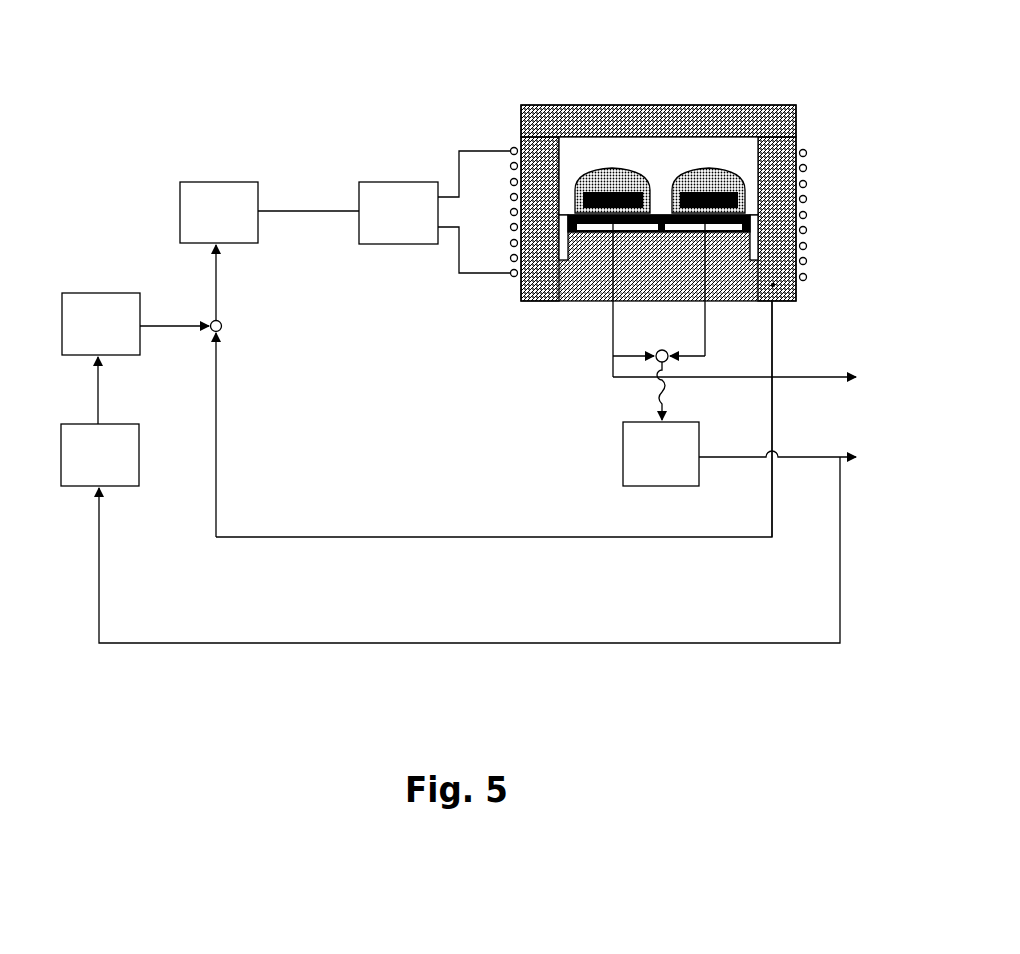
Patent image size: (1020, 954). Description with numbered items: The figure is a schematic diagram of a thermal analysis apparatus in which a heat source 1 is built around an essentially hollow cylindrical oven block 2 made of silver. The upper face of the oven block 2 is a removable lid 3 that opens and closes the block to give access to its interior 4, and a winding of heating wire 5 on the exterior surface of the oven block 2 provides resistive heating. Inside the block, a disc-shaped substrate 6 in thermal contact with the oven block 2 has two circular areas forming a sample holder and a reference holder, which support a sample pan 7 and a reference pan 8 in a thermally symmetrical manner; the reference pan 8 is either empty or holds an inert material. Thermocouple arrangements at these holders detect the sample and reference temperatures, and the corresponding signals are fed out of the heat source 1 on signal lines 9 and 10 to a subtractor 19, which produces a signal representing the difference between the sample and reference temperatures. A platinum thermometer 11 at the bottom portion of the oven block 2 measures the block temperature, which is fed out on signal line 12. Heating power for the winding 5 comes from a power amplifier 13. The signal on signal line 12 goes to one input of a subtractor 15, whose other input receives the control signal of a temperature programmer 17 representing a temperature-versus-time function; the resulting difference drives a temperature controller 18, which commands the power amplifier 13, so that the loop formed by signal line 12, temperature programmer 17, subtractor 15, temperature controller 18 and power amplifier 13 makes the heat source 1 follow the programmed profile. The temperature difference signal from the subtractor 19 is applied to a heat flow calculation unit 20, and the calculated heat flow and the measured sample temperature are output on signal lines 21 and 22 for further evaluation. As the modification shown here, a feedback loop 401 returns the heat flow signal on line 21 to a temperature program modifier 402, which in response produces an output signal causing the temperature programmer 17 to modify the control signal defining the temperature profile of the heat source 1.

The heat source 1 is at (822, 221).
The oven block 2 is at (772, 162).
The removable lid 3 is at (716, 128).
The interior 4 is at (611, 148).
The heating wire winding 5 is at (806, 182).
The substrate 6 is at (662, 215).
The sample pan 7 is at (581, 175).
The reference pan 8 is at (727, 175).
The signal line 9 is at (613, 325).
The signal line 10 is at (705, 327).
The platinum thermometer 11 is at (773, 285).
The signal line 12 is at (772, 417).
The power amplifier 13 is at (395, 190).
The subtractor 15 is at (223, 321).
The temperature programmer 17 is at (95, 300).
The temperature controller 18 is at (213, 200).
The subtractor 19 is at (660, 368).
The heat flow calculation unit 20 is at (667, 486).
The signal line 21 is at (819, 460).
The signal line 22 is at (818, 377).
The feedback loop 401 is at (425, 643).
The temperature program modifier 402 is at (77, 475).